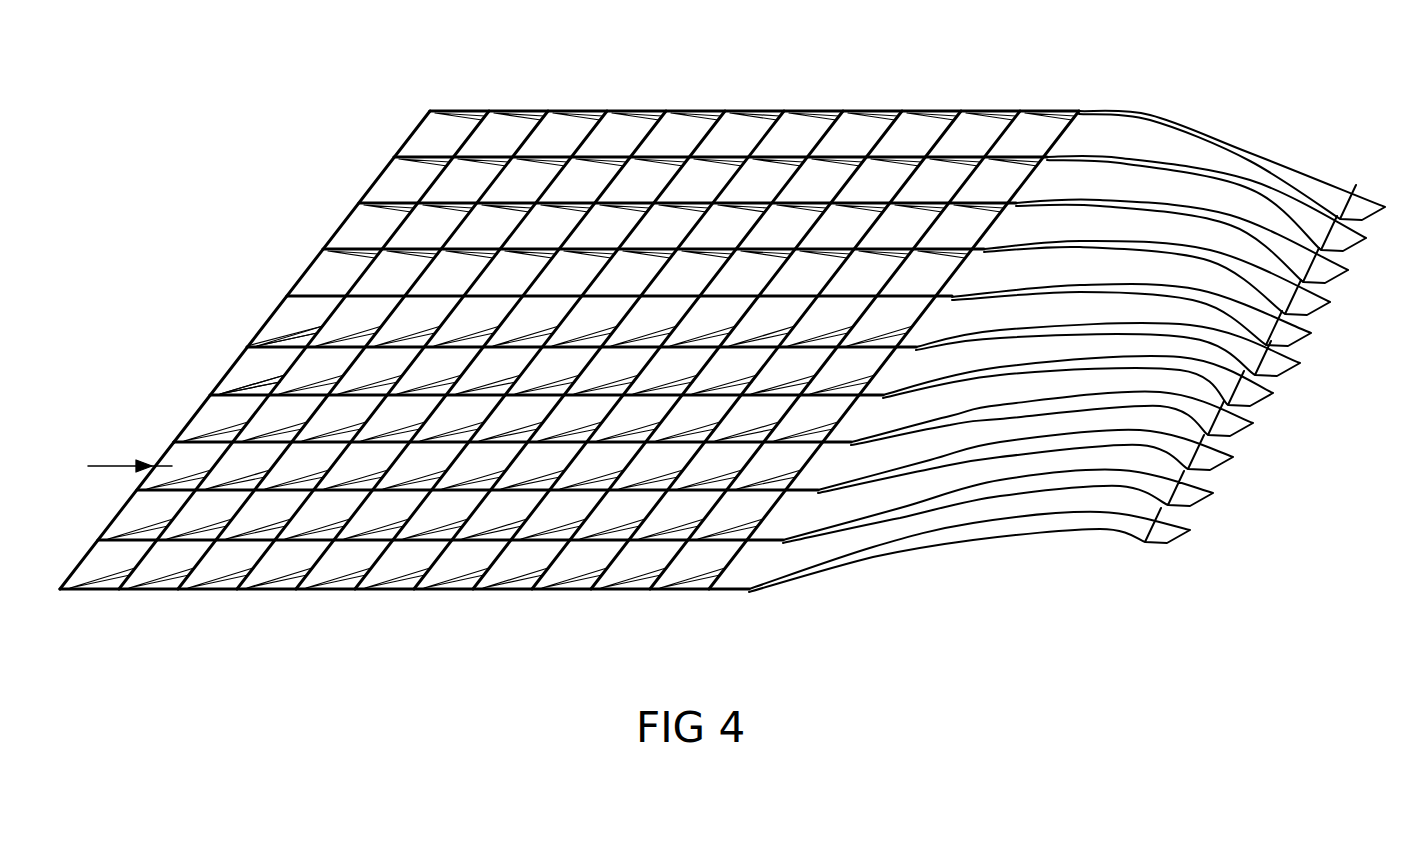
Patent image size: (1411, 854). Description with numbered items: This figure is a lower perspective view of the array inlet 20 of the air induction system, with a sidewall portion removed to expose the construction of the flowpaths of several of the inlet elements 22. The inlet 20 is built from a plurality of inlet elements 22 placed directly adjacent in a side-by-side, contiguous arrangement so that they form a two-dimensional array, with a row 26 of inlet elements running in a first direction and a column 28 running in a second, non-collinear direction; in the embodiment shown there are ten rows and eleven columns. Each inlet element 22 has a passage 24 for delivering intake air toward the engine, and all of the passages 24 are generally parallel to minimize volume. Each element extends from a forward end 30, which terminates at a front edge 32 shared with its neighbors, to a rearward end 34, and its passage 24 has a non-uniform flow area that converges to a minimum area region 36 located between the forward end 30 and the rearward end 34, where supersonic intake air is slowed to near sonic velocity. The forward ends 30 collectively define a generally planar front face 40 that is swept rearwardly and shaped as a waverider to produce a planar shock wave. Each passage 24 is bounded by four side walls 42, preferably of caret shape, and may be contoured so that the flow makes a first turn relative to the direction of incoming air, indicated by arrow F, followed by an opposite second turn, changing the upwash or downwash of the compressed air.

The array inlet 20 is at (1133, 113).
The inlet element 22 is at (393, 232).
The passage 24 is at (327, 273).
The row 26 is at (92, 591).
The column 28 is at (80, 560).
The forward end 30 is at (777, 562).
The front edge 32 is at (597, 573).
The rearward end 34 is at (1152, 508).
The minimum area region 36 is at (1003, 515).
The front face 40 is at (667, 110).
The side walls 42 is at (245, 352).
The arrow F is at (132, 465).